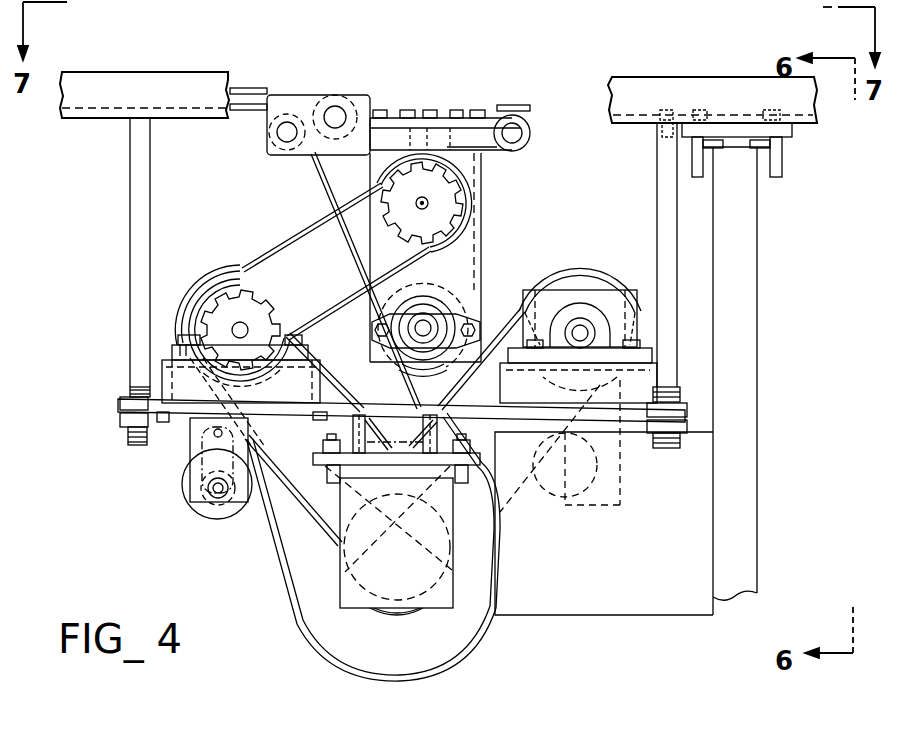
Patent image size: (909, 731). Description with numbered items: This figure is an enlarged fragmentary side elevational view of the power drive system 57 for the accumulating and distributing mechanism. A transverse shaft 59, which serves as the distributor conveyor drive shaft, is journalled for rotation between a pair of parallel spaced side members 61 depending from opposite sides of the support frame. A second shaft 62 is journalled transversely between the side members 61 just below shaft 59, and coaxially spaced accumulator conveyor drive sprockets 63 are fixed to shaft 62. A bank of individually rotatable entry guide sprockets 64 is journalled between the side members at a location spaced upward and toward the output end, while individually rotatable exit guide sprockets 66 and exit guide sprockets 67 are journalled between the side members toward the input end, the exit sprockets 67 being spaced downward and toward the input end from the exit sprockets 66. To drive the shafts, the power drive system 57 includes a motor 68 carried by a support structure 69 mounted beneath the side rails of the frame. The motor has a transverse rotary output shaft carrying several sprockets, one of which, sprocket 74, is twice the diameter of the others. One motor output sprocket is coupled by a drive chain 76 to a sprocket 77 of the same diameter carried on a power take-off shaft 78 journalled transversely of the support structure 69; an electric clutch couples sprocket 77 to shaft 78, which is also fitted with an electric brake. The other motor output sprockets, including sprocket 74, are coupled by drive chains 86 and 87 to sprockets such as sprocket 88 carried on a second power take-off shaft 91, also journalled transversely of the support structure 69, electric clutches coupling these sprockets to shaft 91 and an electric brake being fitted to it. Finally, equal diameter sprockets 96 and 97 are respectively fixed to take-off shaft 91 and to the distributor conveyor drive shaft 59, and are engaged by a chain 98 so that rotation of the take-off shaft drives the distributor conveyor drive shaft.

The power drive system 57 is at (135, 534).
The transverse shaft 59 is at (428, 204).
The side members 61 is at (483, 222).
The second shaft 62 is at (428, 330).
The accumulator conveyor drive sprockets 63 is at (478, 254).
The entry guide sprockets 64 is at (507, 152).
The exit guide sprockets 66 is at (347, 95).
The exit guide sprockets 67 is at (293, 155).
The motor 68 is at (370, 592).
The support structure 69 is at (438, 464).
The sprocket 74 is at (324, 586).
The drive chain 76 is at (457, 393).
The sprocket 77 is at (583, 285).
The power take-off shaft 78 is at (588, 335).
The drive chain 86 is at (342, 412).
The drive chain 87 is at (262, 518).
The sprocket 88 is at (253, 292).
The power take-off shaft 91 is at (233, 330).
The sprocket 96 is at (216, 323).
The sprocket 97 is at (403, 210).
The chain 98 is at (273, 243).